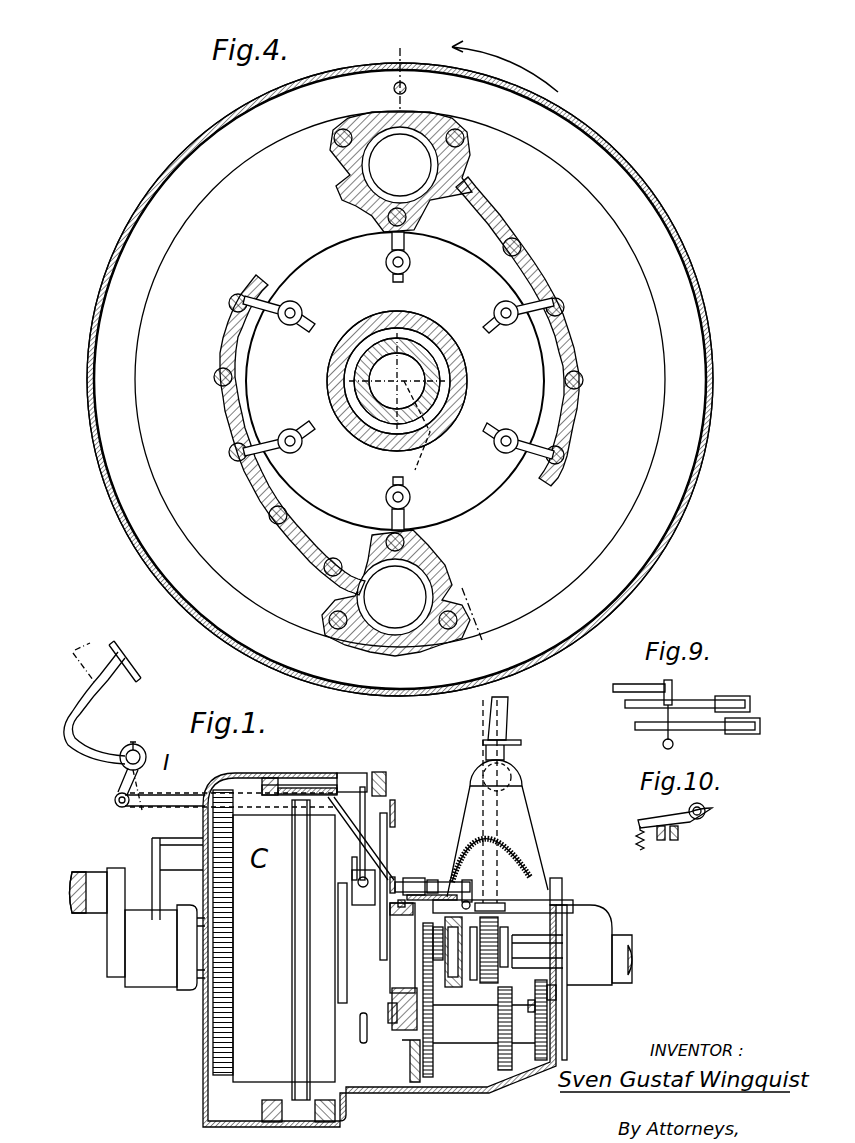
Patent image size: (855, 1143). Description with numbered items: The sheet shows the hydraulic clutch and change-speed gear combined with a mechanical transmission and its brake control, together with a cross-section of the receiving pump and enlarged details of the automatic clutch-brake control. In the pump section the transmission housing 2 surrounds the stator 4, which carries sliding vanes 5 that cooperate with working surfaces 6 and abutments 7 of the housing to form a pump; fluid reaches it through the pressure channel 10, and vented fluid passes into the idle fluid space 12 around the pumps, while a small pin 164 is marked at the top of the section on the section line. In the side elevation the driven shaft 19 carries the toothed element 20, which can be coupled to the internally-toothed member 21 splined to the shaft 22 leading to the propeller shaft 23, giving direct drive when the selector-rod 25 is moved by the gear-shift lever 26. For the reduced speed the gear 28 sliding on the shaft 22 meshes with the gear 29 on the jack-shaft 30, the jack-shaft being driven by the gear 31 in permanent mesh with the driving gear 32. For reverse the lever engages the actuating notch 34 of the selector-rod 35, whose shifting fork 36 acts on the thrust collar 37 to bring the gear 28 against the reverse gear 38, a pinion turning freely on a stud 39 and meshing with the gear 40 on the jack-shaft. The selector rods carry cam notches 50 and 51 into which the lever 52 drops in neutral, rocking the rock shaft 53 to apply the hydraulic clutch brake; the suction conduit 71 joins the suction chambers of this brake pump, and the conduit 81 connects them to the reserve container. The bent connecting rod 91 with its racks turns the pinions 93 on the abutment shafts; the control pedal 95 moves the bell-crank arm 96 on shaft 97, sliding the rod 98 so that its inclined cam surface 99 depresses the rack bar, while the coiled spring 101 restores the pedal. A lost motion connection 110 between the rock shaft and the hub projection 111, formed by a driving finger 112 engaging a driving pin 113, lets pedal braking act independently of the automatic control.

In FIG. 4, the transmission housing 2 is at (600, 120).
In FIG. 4, the stator 4 is at (395, 381).
In FIG. 4, the vanes 5 is at (518, 322).
In FIG. 4, the working surfaces 6 is at (243, 347).
In FIG. 4, the abutments 7 is at (412, 220).
In FIG. 4, the pressure channel 10 is at (397, 384).
In FIG. 4, the idle fluid space 12 is at (400, 379).
In FIG. 4, the driven shaft 19 is at (430, 377).
In FIG. 4, the pin 164 is at (408, 89).
In FIG. 1, the toothed element 20 is at (440, 962).
In FIG. 1, the internally-toothed member 21 is at (465, 987).
In FIG. 1, the shaft 22 is at (524, 952).
In FIG. 1, the propeller shaft 23 is at (628, 932).
In FIG. 1, the selector-rod 25 is at (512, 905).
In FIG. 9, the selector-rod 25 is at (724, 743).
In FIG. 10, the selector-rod 25 is at (660, 840).
In FIG. 1, the gear-shift lever 26 is at (506, 735).
In FIG. 1, the gear 28 is at (520, 960).
In FIG. 1, the gear 29 is at (503, 1070).
In FIG. 1, the jack-shaft 30 is at (461, 1036).
In FIG. 1, the gear 31 is at (428, 1078).
In FIG. 1, the driving gear 32 is at (430, 940).
In FIG. 1, the actuating notch 34 is at (498, 902).
In FIG. 9, the actuating notch 34 is at (700, 700).
In FIG. 9, the selector-rod 35 is at (704, 712).
In FIG. 10, the selector-rod 35 is at (676, 840).
In FIG. 1, the shifting fork 36 is at (500, 960).
In FIG. 1, the thrust collar 37 is at (494, 990).
In FIG. 1, the reverse gear 38 is at (550, 1000).
In FIG. 1, the stud 39 is at (556, 990).
In FIG. 1, the gear 40 is at (548, 1040).
In FIG. 1, the cam notch 50 is at (462, 880).
In FIG. 9, the cam notch 50 is at (676, 738).
In FIG. 1, the cam notch 51 is at (628, 705).
In FIG. 9, the cam notch 51 is at (630, 712).
In FIG. 1, the lever 52 is at (486, 880).
In FIG. 9, the lever 52 is at (674, 700).
In FIG. 10, the lever 52 is at (700, 820).
In FIG. 1, the rock shaft 53 is at (463, 880).
In FIG. 9, the rock shaft 53 is at (626, 684).
In FIG. 10, the rock shaft 53 is at (706, 806).
In FIG. 1, the suction conduit 71 is at (363, 1043).
In FIG. 1, the conduit 81 is at (328, 775).
In FIG. 1, the connecting rod 91 is at (388, 850).
In FIG. 1, the pinions 93 is at (400, 880).
In FIG. 1, the control pedal 95 is at (128, 654).
In FIG. 1, the bell-crank arm 96 is at (115, 800).
In FIG. 1, the shaft 97 is at (145, 752).
In FIG. 1, the rod 98 is at (183, 820).
In FIG. 1, the inclined cam surface 99 is at (372, 795).
In FIG. 1, the coiled spring 101 is at (133, 743).
In FIG. 1, the lost motion connection 110 is at (394, 877).
In FIG. 1, the hub projection 111 is at (392, 908).
In FIG. 1, the driving finger 112 is at (420, 877).
In FIG. 1, the driving pin 113 is at (395, 932).